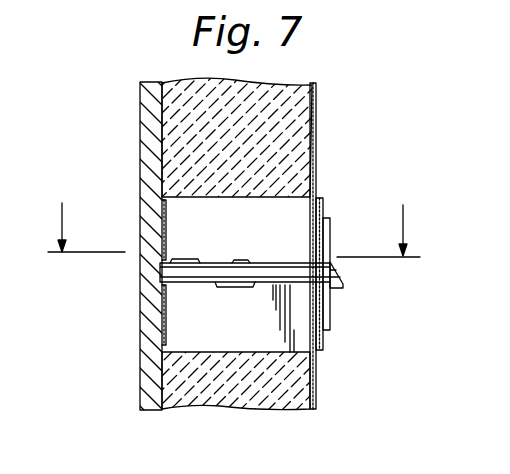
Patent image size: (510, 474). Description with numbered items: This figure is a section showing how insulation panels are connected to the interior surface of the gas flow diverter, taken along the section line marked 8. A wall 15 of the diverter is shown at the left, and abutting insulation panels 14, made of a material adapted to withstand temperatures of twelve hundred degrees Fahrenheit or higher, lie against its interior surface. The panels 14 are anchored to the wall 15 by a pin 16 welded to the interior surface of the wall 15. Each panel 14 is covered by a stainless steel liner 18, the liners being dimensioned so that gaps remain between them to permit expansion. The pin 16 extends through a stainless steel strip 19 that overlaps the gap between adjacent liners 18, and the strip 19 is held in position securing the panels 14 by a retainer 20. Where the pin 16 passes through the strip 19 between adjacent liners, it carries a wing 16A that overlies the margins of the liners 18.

The section line 8- 8 is at (234, 216).
The insulation panel 14 is at (298, 155).
The wall 15 is at (140, 129).
The pin 16 is at (183, 283).
The wing 16A is at (237, 340).
The stainless steel liner 18 is at (317, 125).
The stainless steel strip 19 is at (325, 345).
The retainer 20 is at (333, 323).